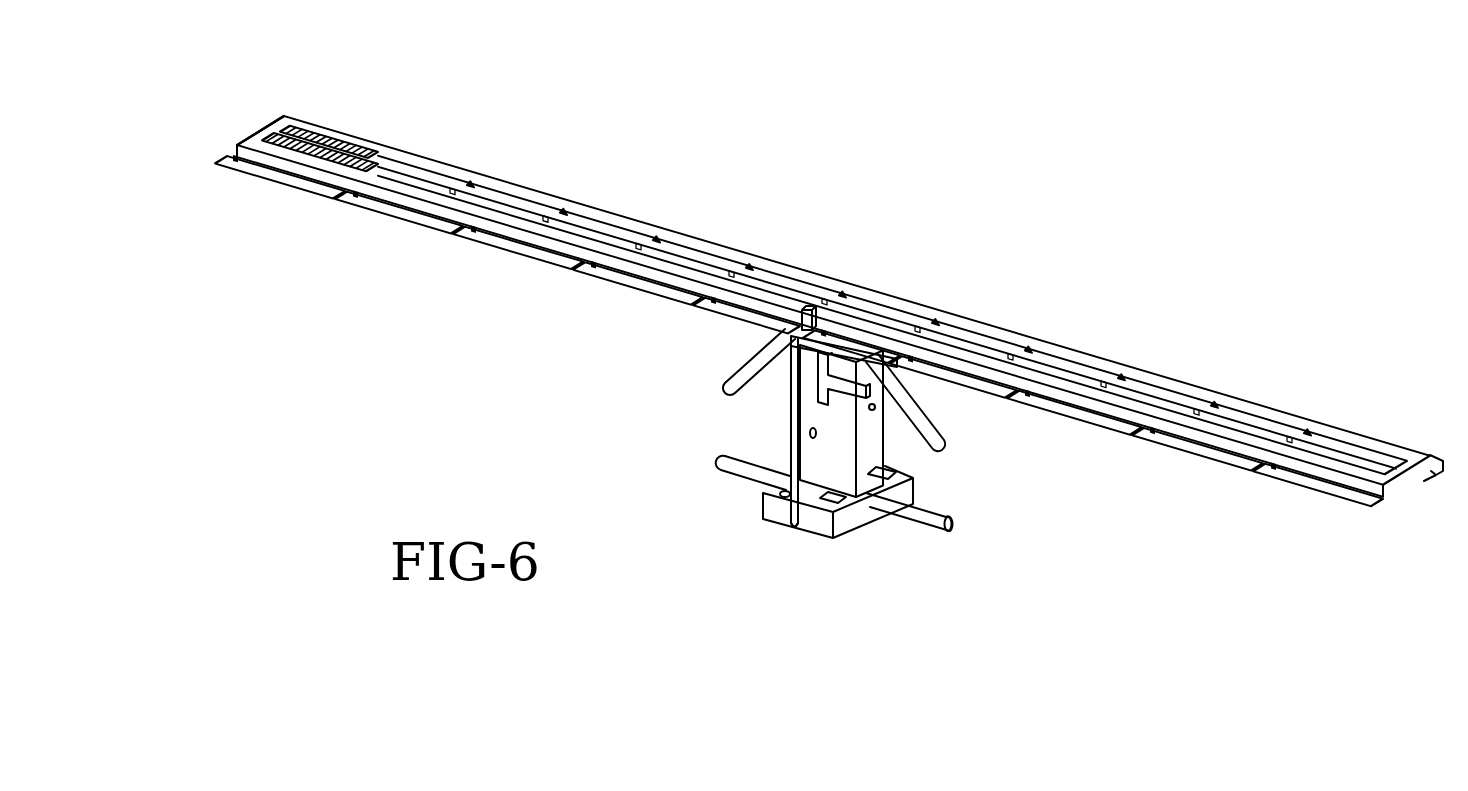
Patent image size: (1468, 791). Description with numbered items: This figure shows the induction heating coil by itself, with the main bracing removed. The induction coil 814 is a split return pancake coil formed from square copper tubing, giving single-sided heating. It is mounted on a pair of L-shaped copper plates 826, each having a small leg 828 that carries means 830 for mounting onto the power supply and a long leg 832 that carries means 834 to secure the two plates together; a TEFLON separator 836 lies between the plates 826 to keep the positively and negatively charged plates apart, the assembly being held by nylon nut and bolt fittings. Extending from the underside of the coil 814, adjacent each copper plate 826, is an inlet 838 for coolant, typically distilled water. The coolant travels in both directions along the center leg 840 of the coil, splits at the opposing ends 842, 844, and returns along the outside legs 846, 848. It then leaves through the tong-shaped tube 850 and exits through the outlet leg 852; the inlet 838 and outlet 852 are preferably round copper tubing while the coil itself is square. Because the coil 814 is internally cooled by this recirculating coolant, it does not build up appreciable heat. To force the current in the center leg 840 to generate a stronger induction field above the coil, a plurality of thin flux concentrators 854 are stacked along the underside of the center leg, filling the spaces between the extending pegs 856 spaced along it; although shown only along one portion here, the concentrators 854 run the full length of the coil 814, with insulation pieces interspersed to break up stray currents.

The induction coil 814 is at (1413, 457).
The copper plate 826 is at (777, 513).
The small leg 828 is at (853, 517).
The means for mounting onto the power supply 830 is at (823, 507).
The long leg 832 is at (800, 425).
The means to secure the two plates together 834 is at (812, 438).
The TEFLON separator 836 is at (793, 527).
The inlet 838 is at (752, 367).
The center leg 840 is at (834, 300).
The opposing end 842 is at (1397, 483).
The opposing end 844 is at (273, 128).
The outside leg 846 is at (512, 222).
The outside leg 848 is at (1077, 355).
The tong-shaped tube 850 is at (820, 381).
The outlet leg 852 is at (918, 527).
The flux concentrators 854 is at (320, 137).
The extending pegs 856 is at (363, 167).